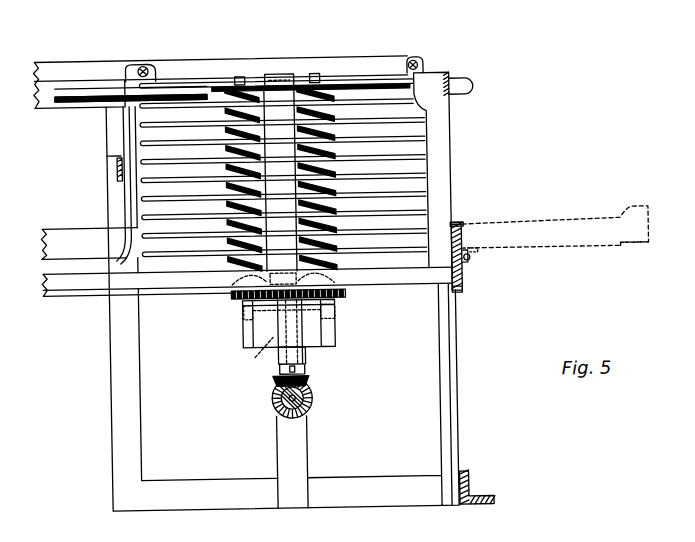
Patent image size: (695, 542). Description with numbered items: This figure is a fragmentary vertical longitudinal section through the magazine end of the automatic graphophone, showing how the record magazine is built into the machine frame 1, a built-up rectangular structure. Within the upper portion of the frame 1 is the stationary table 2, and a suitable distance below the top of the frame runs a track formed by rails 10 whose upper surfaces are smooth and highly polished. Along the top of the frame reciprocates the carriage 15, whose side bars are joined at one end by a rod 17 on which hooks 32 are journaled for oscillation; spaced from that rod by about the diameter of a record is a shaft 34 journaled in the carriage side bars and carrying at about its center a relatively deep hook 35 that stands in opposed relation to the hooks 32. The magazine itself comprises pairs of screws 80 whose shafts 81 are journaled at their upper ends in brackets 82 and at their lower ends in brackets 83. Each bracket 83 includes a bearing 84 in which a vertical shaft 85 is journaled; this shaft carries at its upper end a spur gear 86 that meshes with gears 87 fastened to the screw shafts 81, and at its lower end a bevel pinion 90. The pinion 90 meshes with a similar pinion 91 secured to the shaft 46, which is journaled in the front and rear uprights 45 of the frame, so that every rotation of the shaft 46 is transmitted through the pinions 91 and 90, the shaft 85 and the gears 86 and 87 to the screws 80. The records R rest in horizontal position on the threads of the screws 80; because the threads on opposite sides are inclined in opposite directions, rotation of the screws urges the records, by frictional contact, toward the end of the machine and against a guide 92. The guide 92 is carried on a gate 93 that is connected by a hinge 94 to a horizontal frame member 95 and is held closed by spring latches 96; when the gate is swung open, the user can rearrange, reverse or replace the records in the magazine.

The frame 1 is at (463, 375).
The stationary table 2 is at (105, 88).
The rails 10 is at (93, 278).
The carriage 15 is at (224, 53).
The rod 17 is at (417, 60).
The hooks 32 is at (427, 63).
The shaft 34 is at (148, 63).
The hook 35 is at (134, 71).
The uprights 45 is at (299, 442).
The shaft 46 is at (317, 405).
The screws 80 is at (330, 98).
The shafts 81 is at (322, 74).
The brackets 82 is at (308, 74).
The brackets 83 is at (334, 313).
The bearing 84 is at (299, 329).
The shaft 85 is at (253, 360).
The spur gear 86 is at (286, 307).
The gears 87 is at (346, 293).
The bevel pinions 90 is at (303, 374).
The pinions 91 is at (274, 404).
The guide 92 is at (446, 178).
The gate 93 is at (463, 227).
The hinge 94 is at (469, 262).
The horizontal frame member 95 is at (458, 295).
The spring latches 96 is at (470, 82).
The records R is at (415, 168).